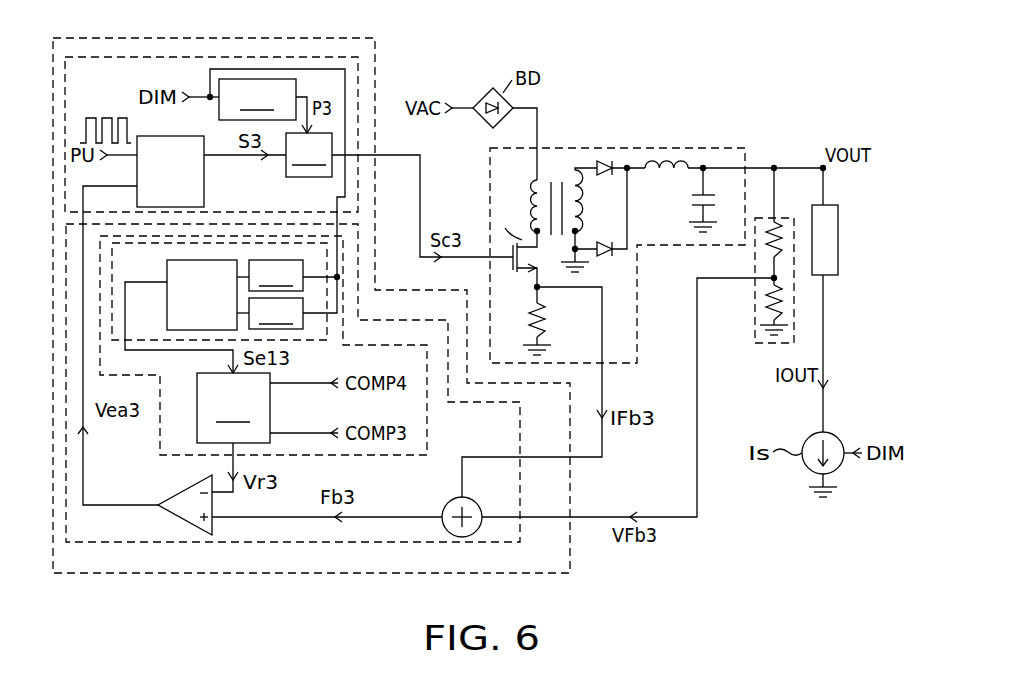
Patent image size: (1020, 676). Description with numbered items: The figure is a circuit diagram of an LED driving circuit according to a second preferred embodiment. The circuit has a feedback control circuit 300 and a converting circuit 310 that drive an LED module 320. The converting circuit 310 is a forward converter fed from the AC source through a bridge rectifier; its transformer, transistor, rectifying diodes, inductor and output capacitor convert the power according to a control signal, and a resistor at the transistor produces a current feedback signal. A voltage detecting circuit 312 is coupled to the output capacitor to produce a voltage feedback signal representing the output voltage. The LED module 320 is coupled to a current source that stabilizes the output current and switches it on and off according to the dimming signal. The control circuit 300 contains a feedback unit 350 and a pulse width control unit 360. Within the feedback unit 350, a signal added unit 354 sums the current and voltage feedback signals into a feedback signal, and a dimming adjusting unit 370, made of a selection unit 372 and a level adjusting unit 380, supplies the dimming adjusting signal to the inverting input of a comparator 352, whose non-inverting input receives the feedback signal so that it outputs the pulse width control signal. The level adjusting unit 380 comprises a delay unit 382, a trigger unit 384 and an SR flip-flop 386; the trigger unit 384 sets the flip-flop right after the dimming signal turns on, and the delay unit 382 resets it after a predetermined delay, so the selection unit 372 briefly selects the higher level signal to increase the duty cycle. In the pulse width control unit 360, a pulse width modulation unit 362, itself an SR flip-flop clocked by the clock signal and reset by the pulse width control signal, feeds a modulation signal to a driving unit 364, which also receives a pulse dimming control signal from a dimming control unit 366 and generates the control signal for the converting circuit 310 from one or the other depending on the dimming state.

The feedback control circuit 300 is at (68, 48).
The converting circuit 310 is at (652, 145).
The voltage detecting circuit 312 is at (757, 302).
The LED module 320 is at (838, 228).
The feedback unit 350 is at (138, 535).
The comparator 352 is at (190, 487).
The signal added unit 354 is at (448, 505).
The pulse width control unit 360 is at (360, 73).
The pulse width modulation unit 362 is at (204, 178).
The driving unit 364 is at (309, 155).
The dimming control unit 366 is at (257, 99).
The dimming adjusting unit 370 is at (415, 405).
The selection unit 372 is at (233, 408).
The level adjusting unit 380 is at (310, 332).
The delay unit 382 is at (276, 275).
The trigger unit 384 is at (276, 313).
The SR flip-flop 386 is at (177, 296).